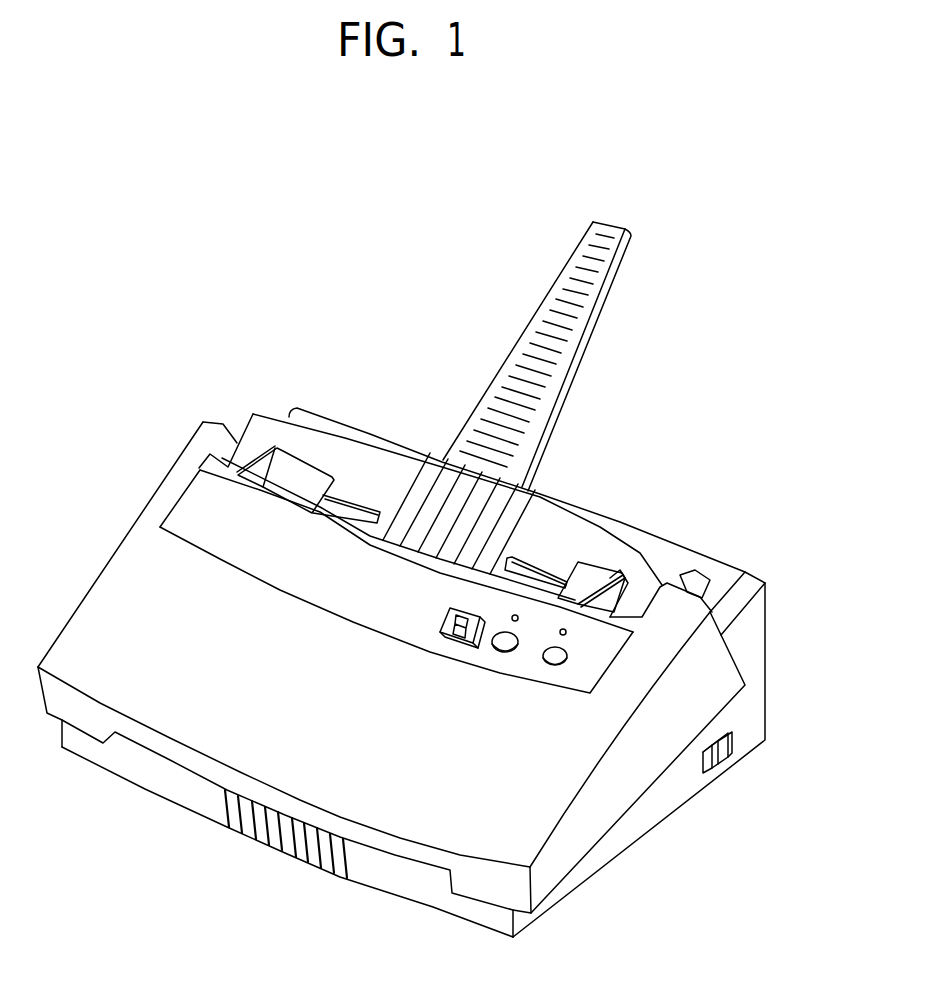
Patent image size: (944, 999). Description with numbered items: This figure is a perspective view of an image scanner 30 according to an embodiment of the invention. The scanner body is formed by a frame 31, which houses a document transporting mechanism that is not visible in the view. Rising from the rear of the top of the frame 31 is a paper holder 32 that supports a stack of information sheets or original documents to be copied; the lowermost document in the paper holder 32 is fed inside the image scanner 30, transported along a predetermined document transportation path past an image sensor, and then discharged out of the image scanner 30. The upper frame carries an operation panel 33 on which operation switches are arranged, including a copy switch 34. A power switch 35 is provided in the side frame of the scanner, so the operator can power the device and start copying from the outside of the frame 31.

The image scanner 30 is at (213, 327).
The frame 31 is at (770, 633).
The paper holder 32 is at (573, 528).
The operation panel 33 is at (353, 622).
The copy switch 34 is at (500, 657).
The power switch 35 is at (722, 755).